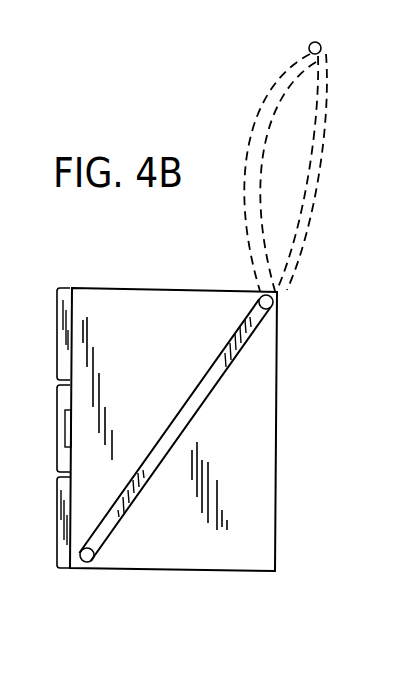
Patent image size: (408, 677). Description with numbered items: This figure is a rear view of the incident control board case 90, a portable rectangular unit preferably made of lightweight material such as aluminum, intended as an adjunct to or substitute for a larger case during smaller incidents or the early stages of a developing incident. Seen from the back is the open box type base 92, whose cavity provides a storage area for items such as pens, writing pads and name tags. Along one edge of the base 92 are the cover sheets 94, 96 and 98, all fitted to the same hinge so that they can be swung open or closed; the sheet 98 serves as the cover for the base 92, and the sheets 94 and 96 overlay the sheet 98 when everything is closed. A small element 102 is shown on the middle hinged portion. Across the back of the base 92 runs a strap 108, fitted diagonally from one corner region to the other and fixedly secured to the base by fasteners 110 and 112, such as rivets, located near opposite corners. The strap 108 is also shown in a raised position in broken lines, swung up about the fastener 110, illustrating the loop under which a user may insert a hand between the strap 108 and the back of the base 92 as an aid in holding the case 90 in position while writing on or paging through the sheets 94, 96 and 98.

The incident control board case 90 is at (115, 271).
The base 92 is at (257, 458).
The cover sheet 94 is at (57, 333).
The cover sheet 96 is at (57, 423).
The cover sheet 98 is at (55, 538).
The latch member 102 is at (67, 431).
The strap 108 is at (250, 138).
The fastener 110 is at (278, 300).
The fastener 112 is at (309, 47).